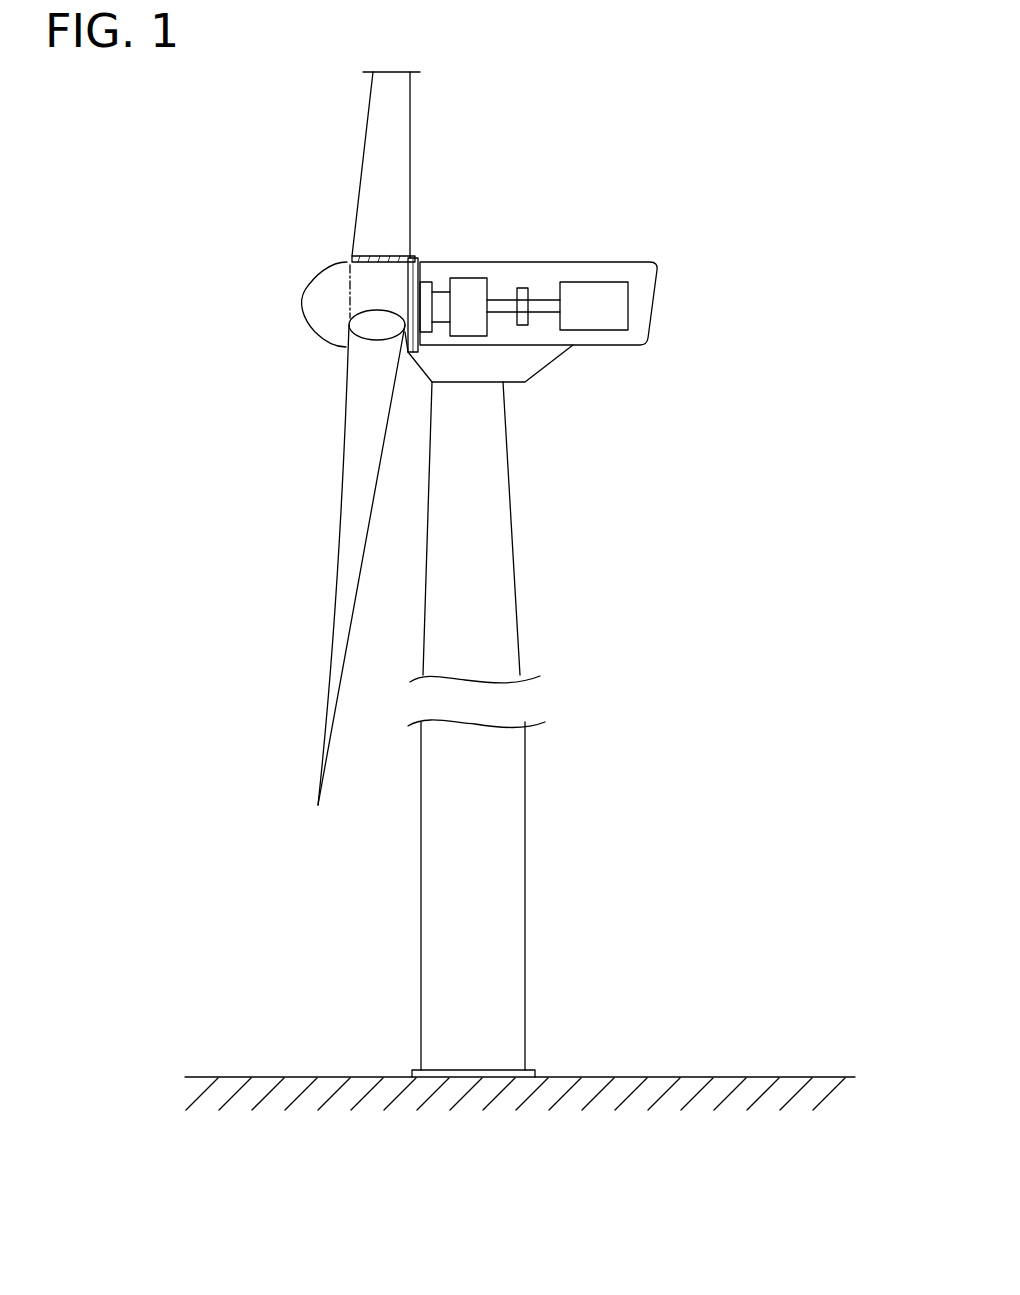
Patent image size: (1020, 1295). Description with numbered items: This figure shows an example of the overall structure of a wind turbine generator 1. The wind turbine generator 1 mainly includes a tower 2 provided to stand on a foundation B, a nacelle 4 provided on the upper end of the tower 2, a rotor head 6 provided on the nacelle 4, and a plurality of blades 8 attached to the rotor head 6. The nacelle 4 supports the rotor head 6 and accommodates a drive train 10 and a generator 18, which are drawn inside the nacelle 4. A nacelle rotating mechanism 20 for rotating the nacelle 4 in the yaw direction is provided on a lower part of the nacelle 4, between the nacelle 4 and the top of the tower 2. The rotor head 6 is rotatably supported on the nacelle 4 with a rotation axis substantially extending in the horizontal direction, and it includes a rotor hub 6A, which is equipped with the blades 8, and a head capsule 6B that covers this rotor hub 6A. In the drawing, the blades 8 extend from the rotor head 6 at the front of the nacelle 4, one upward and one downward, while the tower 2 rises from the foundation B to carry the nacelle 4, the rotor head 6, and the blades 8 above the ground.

The wind turbine generator 1 is at (665, 158).
The tower 2 is at (525, 847).
The nacelle 4 is at (658, 300).
The rotor head 6 is at (275, 305).
The rotor hub 6A is at (365, 293).
The head capsule 6B is at (318, 330).
The blade 8 is at (365, 150).
The drive train 10 is at (502, 290).
The generator 18 is at (595, 302).
The nacelle rotating mechanism 20 is at (530, 362).
The foundation B is at (410, 1073).